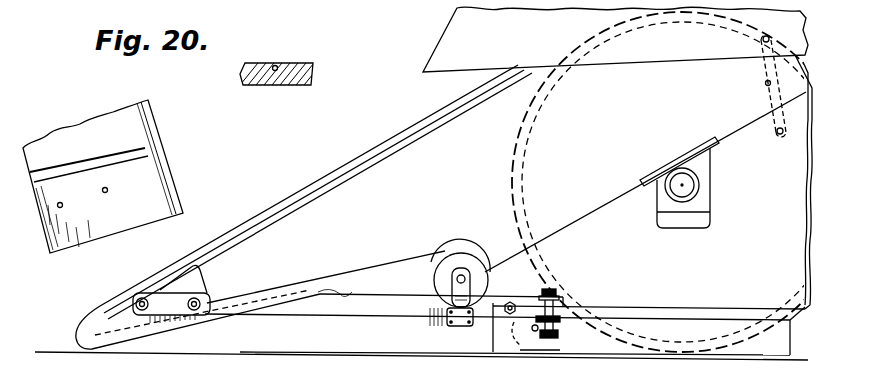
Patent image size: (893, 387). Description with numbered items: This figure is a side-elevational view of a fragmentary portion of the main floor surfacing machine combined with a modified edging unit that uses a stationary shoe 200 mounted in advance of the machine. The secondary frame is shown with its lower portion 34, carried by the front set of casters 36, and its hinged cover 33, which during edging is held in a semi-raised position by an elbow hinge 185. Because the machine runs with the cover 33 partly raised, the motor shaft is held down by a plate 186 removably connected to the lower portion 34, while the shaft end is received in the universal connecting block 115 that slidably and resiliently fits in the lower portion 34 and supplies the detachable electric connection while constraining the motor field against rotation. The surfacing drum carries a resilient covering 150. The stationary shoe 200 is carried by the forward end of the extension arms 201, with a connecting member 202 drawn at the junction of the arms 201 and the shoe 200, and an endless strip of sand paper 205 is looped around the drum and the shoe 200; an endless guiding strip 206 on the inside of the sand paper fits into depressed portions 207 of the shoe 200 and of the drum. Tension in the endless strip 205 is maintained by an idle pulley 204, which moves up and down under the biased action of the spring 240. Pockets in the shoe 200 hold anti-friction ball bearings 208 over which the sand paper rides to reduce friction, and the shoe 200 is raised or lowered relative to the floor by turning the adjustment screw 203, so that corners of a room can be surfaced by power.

The cover 33 is at (455, 33).
The lower portion of the secondary frame 34 is at (620, 247).
The front set of casters 36 is at (538, 352).
The universal connecting block 115 is at (703, 195).
The resilient covering 150 is at (512, 186).
The elbow hinge 185 is at (766, 70).
The plate 186 is at (697, 133).
The stationary shoe 200 is at (130, 220).
The extension arms 201 is at (350, 312).
The clamping plate 202 is at (132, 295).
The adjustment screw 203 is at (556, 332).
The idle pulley 204 is at (443, 272).
The endless strip of sand paper 205 is at (330, 173).
The endless guiding strip 206 is at (340, 180).
The depressed portions 207 is at (137, 150).
The anti-friction ball bearings 208 is at (105, 188).
The spring 240 is at (473, 327).